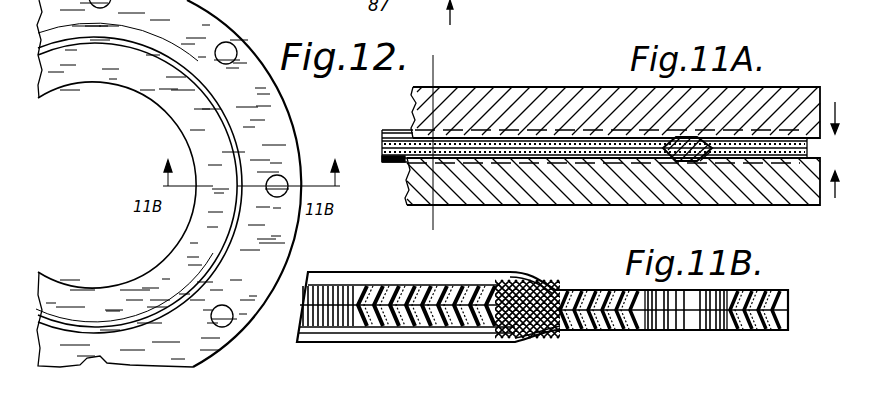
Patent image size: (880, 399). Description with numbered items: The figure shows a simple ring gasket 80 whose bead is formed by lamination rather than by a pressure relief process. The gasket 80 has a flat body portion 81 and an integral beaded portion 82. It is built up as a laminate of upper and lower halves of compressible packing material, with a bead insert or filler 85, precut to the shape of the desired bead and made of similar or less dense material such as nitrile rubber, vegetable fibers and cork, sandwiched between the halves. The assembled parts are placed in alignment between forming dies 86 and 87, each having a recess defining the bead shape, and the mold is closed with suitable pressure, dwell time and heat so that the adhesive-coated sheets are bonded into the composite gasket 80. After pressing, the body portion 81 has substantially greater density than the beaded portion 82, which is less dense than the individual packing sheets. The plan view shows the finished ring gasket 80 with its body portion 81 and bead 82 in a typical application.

In FIG. 12, the ring gasket 80 is at (221, 18).
In FIG. 11B, the ring gasket 80 is at (388, 283).
In FIG. 12, the body portion 81 is at (272, 140).
In FIG. 11A, the body portion 81 is at (787, 138).
In FIG. 11B, the body portion 81 is at (440, 287).
In FIG. 12, the beaded portion 82 is at (153, 48).
In FIG. 11A, the beaded portion 82 is at (695, 136).
In FIG. 11B, the beaded portion 82 is at (557, 270).
In FIG. 11B, the bead insert or filler 85 is at (550, 337).
In FIG. 11A, the forming die 86 is at (533, 108).
In FIG. 11A, the forming die 87 is at (762, 193).